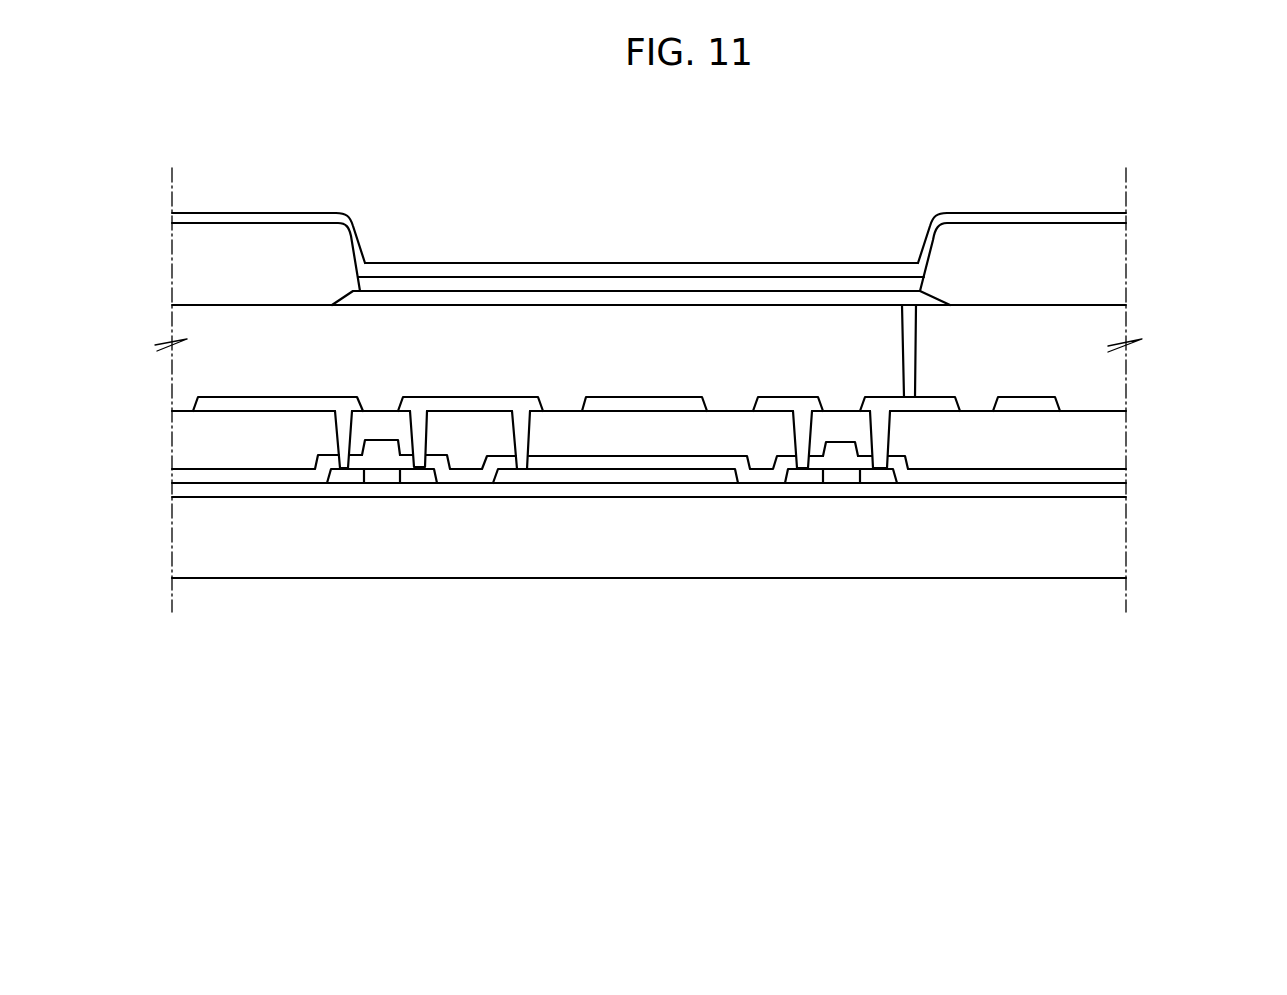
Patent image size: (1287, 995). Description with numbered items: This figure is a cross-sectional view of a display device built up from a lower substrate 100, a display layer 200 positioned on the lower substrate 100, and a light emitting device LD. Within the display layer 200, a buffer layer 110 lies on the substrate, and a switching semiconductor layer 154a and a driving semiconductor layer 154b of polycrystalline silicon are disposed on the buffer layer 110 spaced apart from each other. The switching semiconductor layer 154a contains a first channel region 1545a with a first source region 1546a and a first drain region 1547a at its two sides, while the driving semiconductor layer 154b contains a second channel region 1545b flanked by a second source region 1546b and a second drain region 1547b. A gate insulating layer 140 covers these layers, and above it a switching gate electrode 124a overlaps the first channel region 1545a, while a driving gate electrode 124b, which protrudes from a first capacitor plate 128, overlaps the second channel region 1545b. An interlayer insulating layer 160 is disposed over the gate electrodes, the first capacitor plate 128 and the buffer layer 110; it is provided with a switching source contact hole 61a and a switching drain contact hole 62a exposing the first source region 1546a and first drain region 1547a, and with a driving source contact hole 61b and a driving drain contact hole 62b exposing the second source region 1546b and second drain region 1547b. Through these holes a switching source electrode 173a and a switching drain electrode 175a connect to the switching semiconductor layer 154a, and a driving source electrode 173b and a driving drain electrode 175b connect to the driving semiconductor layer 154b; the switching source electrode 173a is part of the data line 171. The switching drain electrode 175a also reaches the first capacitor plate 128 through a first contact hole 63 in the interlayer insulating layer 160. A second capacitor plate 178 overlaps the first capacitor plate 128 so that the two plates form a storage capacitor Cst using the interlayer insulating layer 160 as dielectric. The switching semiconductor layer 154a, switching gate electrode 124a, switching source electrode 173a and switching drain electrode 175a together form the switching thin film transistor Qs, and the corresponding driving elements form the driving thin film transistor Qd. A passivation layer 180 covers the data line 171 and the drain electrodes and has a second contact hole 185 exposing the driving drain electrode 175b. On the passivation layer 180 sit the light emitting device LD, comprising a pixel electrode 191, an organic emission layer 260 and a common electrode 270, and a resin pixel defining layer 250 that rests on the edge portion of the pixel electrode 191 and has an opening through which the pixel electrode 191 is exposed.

The lower substrate 100 is at (1100, 543).
The buffer layer 110 is at (685, 501).
The gate insulating layer 140 is at (385, 462).
The interlayer insulating layer 160 is at (1100, 435).
The passivation layer 180 is at (1100, 372).
The second contact hole 185 is at (894, 287).
The pixel electrode 191 is at (641, 244).
The organic emission layer 260 is at (641, 230).
The common electrode 270 is at (641, 223).
The pixel defining layer 250 is at (1100, 263).
The display layer 200 is at (1204, 517).
The light emitting device LD is at (722, 184).
The data line 171 is at (213, 403).
The switching source electrode 173a is at (266, 552).
The switching drain electrode 175a is at (472, 552).
The switching gate electrode 124a is at (321, 573).
The switching semiconductor layer 154a is at (473, 662).
The first source region 1546a is at (327, 565).
The first channel region 1545a is at (382, 569).
The first drain region 1547a is at (438, 565).
The switching source contact hole 61a is at (342, 425).
The switching drain contact hole 62a is at (435, 322).
The first contact hole 63 is at (519, 323).
The switching thin film transistor Qs is at (547, 708).
The first capacitor plate 128 is at (615, 565).
The second capacitor plate 178 is at (644, 529).
The storage capacitor Cst is at (695, 662).
The driving source electrode 173b is at (766, 552).
The driving drain electrode 175b is at (965, 552).
The driving gate electrode 124b is at (914, 570).
The driving semiconductor layer 154b is at (937, 662).
The second source region 1546b is at (791, 565).
The second channel region 1545b is at (850, 569).
The second drain region 1547b is at (900, 565).
The driving source contact hole 61b is at (785, 322).
The driving drain contact hole 62b is at (855, 322).
The driving thin film transistor Qd is at (710, 706).